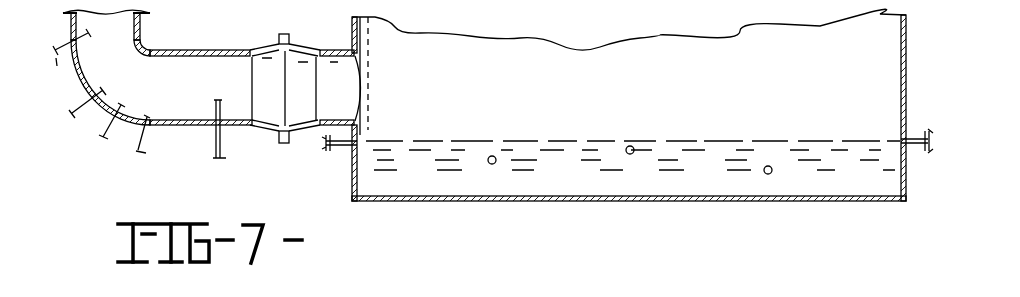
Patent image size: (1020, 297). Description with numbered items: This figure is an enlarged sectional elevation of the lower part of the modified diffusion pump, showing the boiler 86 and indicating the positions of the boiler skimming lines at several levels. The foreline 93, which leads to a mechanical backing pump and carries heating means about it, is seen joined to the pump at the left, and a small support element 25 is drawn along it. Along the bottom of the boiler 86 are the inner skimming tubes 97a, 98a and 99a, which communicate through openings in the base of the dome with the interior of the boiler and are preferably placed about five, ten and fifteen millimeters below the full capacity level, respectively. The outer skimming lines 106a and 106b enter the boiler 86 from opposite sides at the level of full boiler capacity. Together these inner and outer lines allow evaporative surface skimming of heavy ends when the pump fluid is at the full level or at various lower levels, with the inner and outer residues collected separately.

The exhaust duct 25 is at (229, 107).
The foreline 93 is at (98, 90).
The boiler 86 is at (412, 200).
The outer skimming line 106a is at (343, 148).
The outer skimming line 106b is at (920, 133).
The skimming tube 98a is at (490, 164).
The skimming tube 97a is at (628, 154).
The skimming tube 99a is at (766, 174).